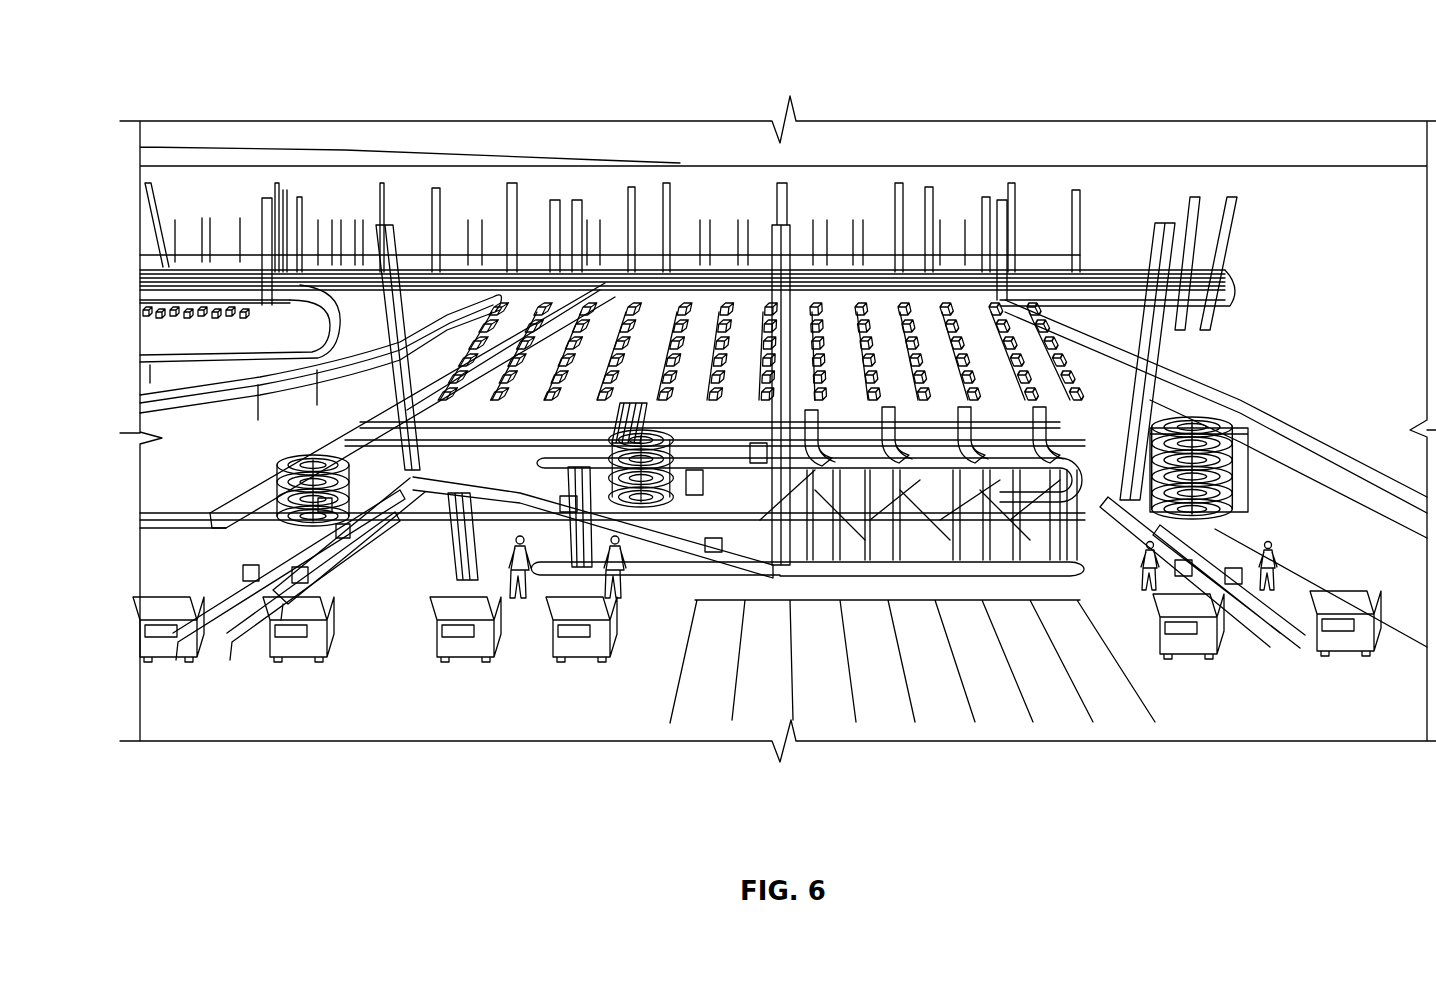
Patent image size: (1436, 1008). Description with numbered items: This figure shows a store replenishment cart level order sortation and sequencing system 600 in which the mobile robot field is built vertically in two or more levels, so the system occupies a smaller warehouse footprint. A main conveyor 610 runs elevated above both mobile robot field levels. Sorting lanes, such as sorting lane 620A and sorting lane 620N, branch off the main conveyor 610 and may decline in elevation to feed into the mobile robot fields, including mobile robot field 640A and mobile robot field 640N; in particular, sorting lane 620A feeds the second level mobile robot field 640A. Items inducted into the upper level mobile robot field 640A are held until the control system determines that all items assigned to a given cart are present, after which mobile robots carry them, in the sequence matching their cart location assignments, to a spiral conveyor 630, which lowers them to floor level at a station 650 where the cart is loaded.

The store replenishment cart level order sortation and sequencing system 600 is at (252, 56).
The main conveyor 610 is at (1032, 280).
The sorting lane 620A is at (528, 435).
The sorting lane 620N is at (740, 563).
The spiral conveyor 630 is at (1227, 430).
The mobile robot field 640A is at (1078, 370).
The mobile robot field 640N is at (1020, 476).
The station 650 is at (1223, 560).